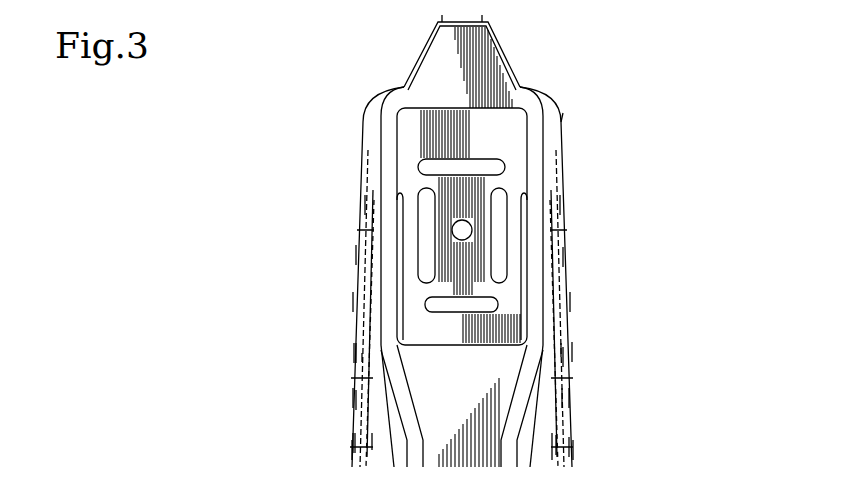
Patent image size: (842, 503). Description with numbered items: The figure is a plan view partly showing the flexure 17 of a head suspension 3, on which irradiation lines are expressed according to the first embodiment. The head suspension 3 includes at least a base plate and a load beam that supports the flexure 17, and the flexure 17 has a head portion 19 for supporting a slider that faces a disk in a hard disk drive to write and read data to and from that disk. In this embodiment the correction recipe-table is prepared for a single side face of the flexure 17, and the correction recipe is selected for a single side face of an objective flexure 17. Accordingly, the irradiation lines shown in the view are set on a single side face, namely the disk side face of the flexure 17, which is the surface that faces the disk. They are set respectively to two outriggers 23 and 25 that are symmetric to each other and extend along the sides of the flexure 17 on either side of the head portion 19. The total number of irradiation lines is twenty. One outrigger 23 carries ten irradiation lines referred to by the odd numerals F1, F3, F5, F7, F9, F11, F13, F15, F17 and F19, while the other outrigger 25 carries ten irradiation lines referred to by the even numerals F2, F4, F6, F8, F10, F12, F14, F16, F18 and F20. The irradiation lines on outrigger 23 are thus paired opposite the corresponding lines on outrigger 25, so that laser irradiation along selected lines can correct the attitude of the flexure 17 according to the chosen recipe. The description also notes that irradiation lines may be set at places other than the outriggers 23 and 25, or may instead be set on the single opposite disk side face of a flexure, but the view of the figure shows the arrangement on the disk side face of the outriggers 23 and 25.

The head suspension 3 is at (553, 97).
The flexure 17 is at (563, 113).
The head portion 19 is at (460, 221).
The outrigger 23 is at (357, 232).
The outrigger 25 is at (568, 237).
The irradiation line F1 is at (352, 443).
The irradiation line F2 is at (555, 445).
The irradiation line F3 is at (350, 448).
The irradiation line F4 is at (573, 450).
The irradiation line F5 is at (353, 443).
The irradiation line F6 is at (568, 447).
The irradiation line F7 is at (353, 398).
The irradiation line F8 is at (568, 398).
The irradiation line F9 is at (355, 400).
The irradiation line F10 is at (562, 398).
The irradiation line F11 is at (355, 353).
The irradiation line F12 is at (563, 357).
The irradiation line F13 is at (353, 353).
The irradiation line F14 is at (573, 352).
The irradiation line F15 is at (352, 302).
The irradiation line F16 is at (570, 302).
The irradiation line F17 is at (355, 255).
The irradiation line F18 is at (563, 257).
The irradiation line F19 is at (365, 202).
The irradiation line F20 is at (560, 202).